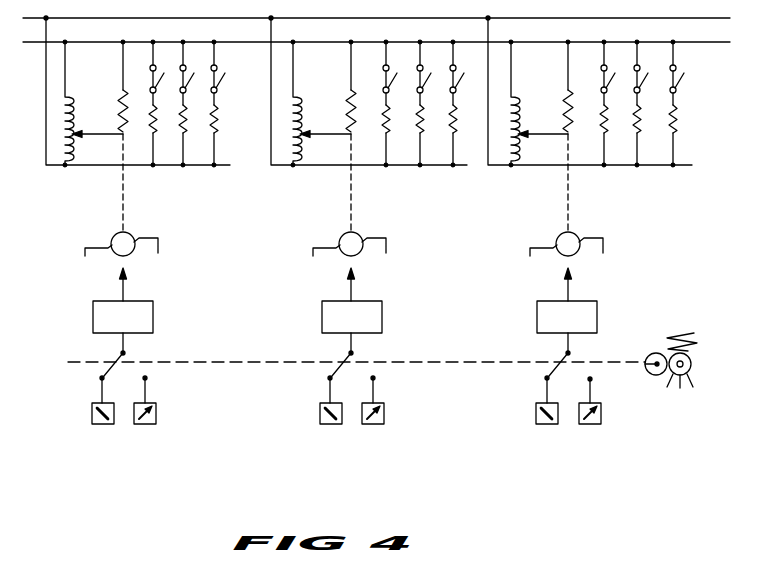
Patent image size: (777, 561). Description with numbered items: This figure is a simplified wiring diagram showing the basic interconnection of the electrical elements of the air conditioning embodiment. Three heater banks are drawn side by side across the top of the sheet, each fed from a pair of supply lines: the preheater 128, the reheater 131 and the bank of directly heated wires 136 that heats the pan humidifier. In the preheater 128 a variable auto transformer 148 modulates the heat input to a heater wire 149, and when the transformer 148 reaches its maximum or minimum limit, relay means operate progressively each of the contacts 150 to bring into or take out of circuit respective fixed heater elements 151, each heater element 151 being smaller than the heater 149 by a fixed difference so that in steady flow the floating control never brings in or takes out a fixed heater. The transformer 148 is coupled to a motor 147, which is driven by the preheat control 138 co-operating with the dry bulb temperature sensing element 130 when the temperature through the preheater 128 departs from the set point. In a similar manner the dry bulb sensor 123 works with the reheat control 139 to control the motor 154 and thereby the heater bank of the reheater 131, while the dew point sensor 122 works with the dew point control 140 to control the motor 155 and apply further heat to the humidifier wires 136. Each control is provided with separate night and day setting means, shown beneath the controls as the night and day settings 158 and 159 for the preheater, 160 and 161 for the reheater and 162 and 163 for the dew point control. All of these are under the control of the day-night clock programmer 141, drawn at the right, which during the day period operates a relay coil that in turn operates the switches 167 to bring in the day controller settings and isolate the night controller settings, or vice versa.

The preheater 128 is at (146, 124).
The reheater 131 is at (313, 183).
The bank of directly heated wires 136 is at (527, 180).
The variable auto transformer 148 is at (72, 108).
The heater wire 149 is at (125, 135).
The contacts 150 is at (221, 80).
The fixed heater elements 151 is at (216, 123).
The motor 147 is at (112, 255).
The motor 154 is at (359, 237).
The motor 155 is at (576, 237).
The dry bulb temperature sensing element 130 is at (140, 312).
The dry bulb sensor 123 is at (372, 312).
The dew point sensor 122 is at (590, 315).
The switches 167 is at (96, 376).
The preheat control 138 is at (90, 414).
The reheat control 139 is at (317, 413).
The dew point control 140 is at (532, 414).
The night setting means 158 is at (104, 424).
The day setting means 159 is at (146, 424).
The night setting means 160 is at (332, 424).
The day setting means 161 is at (374, 424).
The night setting means 162 is at (548, 424).
The day setting means 163 is at (591, 424).
The day-night clock programmer 141 is at (691, 360).